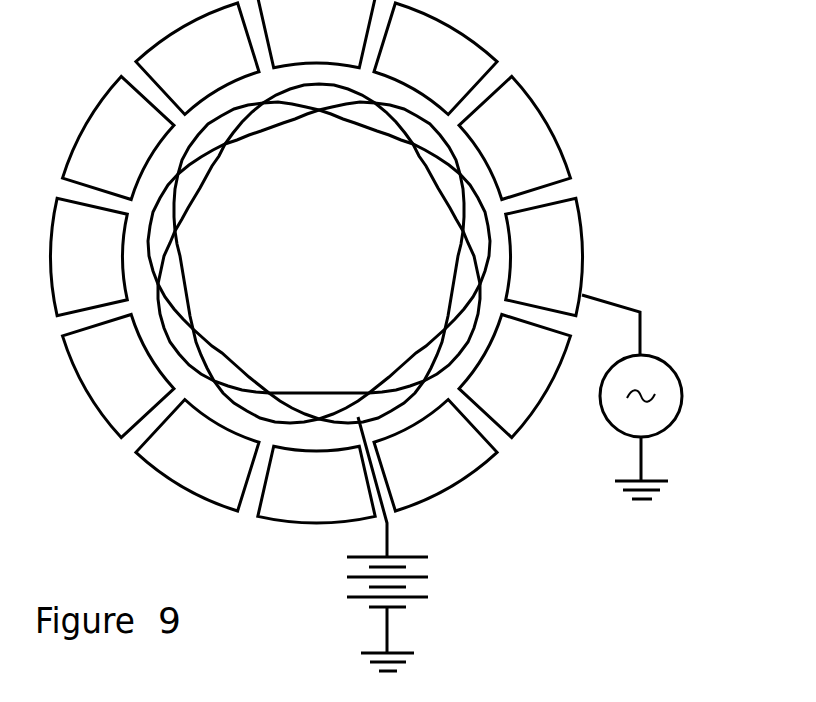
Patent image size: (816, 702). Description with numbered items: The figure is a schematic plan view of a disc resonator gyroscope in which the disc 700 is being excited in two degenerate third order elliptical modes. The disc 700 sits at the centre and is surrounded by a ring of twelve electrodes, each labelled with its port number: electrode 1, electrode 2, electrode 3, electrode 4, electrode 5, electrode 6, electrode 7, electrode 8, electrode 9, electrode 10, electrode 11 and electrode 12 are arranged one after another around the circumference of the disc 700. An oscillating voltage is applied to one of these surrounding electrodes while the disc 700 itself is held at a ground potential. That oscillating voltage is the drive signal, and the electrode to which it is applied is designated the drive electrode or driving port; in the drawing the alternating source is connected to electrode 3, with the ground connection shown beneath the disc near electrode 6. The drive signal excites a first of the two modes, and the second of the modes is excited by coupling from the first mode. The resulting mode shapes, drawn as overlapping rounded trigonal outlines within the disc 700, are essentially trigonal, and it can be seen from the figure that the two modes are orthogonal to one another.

The electrode (port number one) 1 is at (435, 59).
The electrode (port number two) 2 is at (515, 137).
The electrode (port number three) 3 is at (544, 256).
The electrode (port number four) 4 is at (515, 376).
The electrode (port number five) 5 is at (435, 456).
The electrode (port number six) 6 is at (316, 484).
The electrode (port number seven) 7 is at (197, 456).
The electrode (port number eight) 8 is at (119, 376).
The electrode (port number nine) 9 is at (89, 256).
The electrode (port number ten) 10 is at (119, 137).
The electrode (port number eleven) 11 is at (197, 59).
The electrode (port number twelve) 12 is at (316, 34).
The disc 700 is at (428, 238).